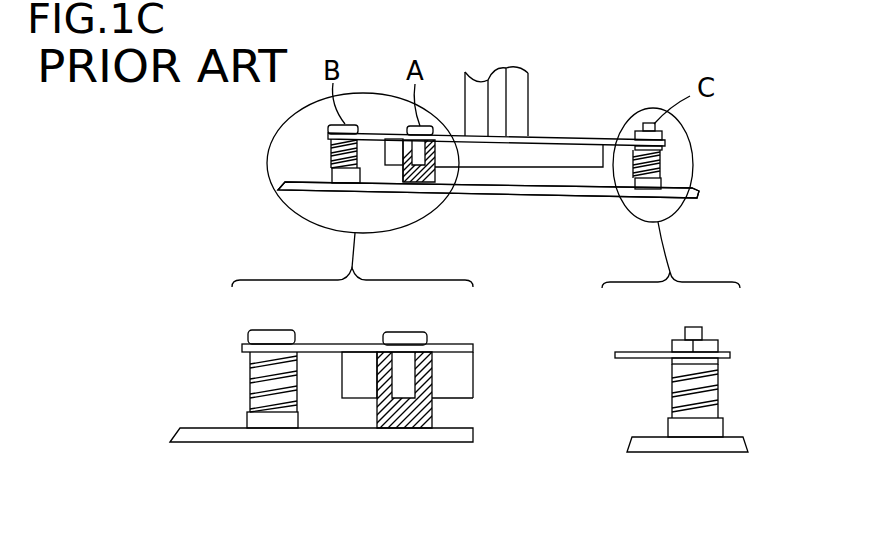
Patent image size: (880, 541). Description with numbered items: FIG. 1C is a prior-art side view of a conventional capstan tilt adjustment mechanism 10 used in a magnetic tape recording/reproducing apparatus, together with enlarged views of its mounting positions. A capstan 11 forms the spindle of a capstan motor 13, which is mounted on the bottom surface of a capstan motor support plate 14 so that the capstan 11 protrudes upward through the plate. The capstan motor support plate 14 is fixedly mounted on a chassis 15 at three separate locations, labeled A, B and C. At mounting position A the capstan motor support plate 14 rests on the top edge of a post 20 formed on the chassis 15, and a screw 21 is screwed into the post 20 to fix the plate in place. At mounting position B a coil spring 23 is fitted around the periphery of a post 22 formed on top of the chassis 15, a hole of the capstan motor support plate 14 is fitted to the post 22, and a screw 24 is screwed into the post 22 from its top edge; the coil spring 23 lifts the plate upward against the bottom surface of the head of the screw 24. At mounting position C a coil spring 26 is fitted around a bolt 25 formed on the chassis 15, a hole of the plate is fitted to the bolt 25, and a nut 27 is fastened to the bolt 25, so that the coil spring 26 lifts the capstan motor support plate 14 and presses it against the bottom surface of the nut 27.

The capstan tilt adjustment mechanism 10 is at (706, 50).
The capstan 11 is at (506, 92).
The capstan motor 13 is at (578, 158).
The capstan motor support plate 14 is at (612, 137).
The chassis 15 is at (537, 194).
The post 20 is at (432, 412).
The screw 21 is at (397, 330).
The post 22 is at (248, 423).
The coil spring 23 is at (256, 386).
The screw 24 is at (258, 335).
The bolt 25 is at (703, 328).
The coil spring 26 is at (718, 385).
The nut 27 is at (670, 342).